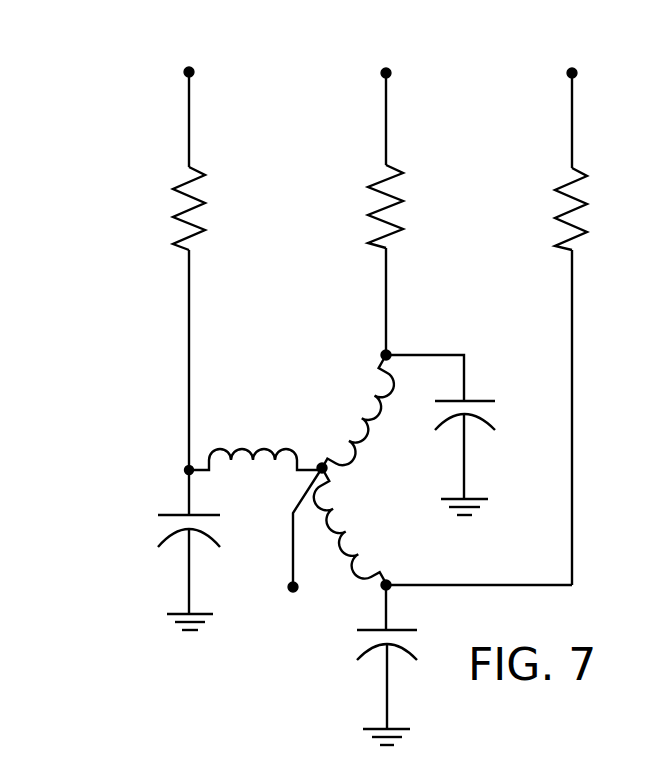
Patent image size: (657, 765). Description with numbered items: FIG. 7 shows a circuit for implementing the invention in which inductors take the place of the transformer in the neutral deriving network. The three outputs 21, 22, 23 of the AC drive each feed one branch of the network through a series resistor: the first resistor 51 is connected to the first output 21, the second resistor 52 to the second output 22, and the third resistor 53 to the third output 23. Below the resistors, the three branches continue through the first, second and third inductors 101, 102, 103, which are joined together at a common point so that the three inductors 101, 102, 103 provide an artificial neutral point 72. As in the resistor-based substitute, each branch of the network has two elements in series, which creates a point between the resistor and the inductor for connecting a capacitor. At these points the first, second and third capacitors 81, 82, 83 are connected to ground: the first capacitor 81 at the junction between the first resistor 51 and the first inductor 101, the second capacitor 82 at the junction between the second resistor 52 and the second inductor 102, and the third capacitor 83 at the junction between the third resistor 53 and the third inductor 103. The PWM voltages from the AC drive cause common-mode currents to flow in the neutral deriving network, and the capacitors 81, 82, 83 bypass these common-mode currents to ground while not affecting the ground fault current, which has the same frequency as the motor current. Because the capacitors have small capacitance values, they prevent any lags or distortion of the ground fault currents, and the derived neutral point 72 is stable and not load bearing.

The output of the AC drive 21 is at (190, 55).
The output of the AC drive 22 is at (387, 57).
The output of the AC drive 23 is at (572, 57).
The series resistor R1 51 is at (168, 167).
The series resistor R2 52 is at (364, 166).
The series resistor R3 53 is at (551, 168).
The neutral point 72 is at (302, 545).
The capacitor C1 81 is at (146, 516).
The capacitor C2 82 is at (505, 406).
The capacitor C3 83 is at (343, 652).
The inductor L1 101 is at (229, 432).
The inductor L2 102 is at (354, 382).
The inductor L3 103 is at (355, 500).